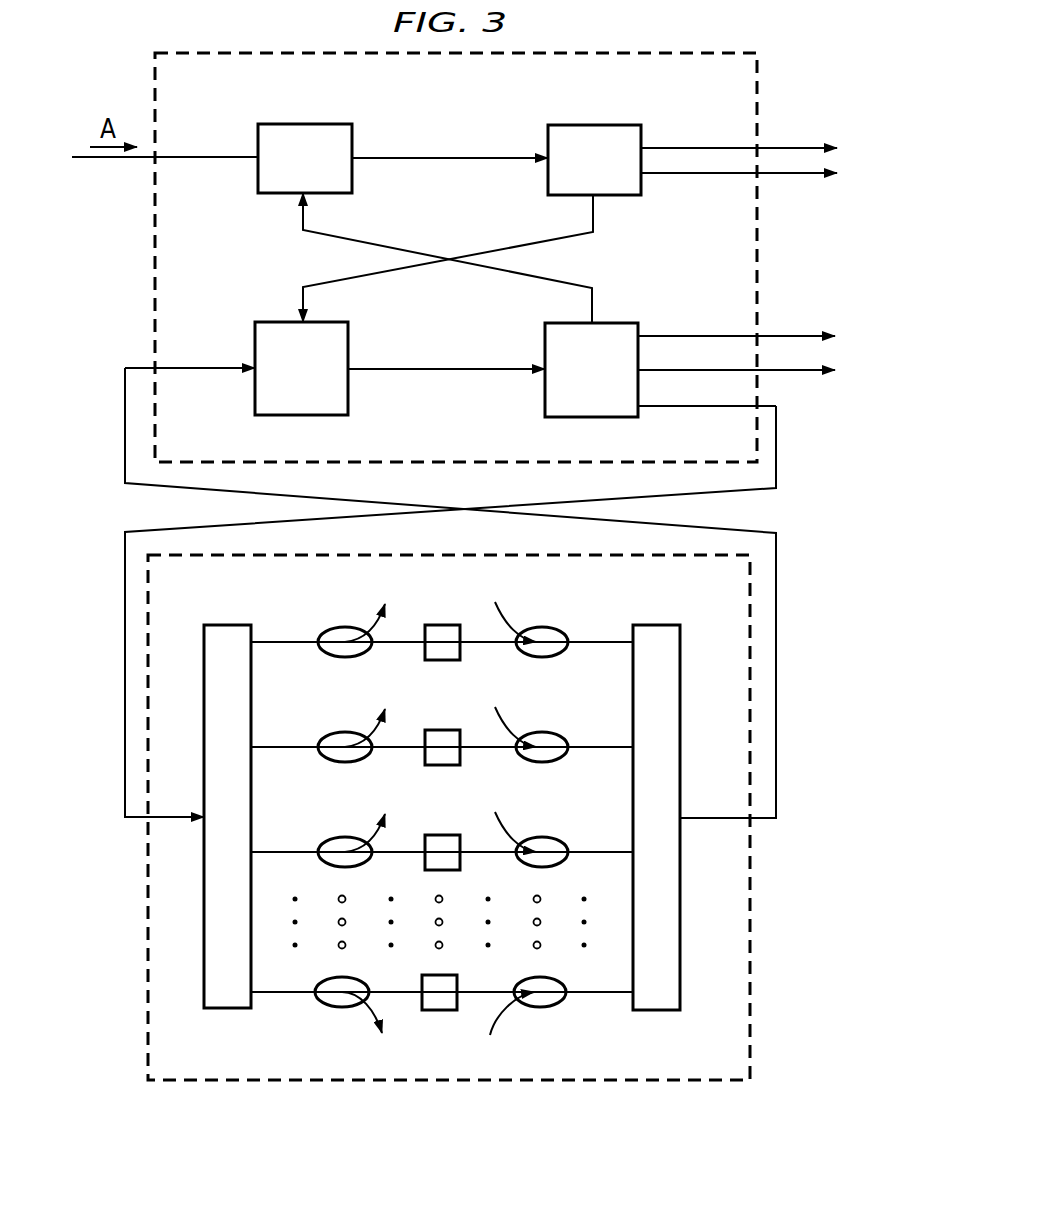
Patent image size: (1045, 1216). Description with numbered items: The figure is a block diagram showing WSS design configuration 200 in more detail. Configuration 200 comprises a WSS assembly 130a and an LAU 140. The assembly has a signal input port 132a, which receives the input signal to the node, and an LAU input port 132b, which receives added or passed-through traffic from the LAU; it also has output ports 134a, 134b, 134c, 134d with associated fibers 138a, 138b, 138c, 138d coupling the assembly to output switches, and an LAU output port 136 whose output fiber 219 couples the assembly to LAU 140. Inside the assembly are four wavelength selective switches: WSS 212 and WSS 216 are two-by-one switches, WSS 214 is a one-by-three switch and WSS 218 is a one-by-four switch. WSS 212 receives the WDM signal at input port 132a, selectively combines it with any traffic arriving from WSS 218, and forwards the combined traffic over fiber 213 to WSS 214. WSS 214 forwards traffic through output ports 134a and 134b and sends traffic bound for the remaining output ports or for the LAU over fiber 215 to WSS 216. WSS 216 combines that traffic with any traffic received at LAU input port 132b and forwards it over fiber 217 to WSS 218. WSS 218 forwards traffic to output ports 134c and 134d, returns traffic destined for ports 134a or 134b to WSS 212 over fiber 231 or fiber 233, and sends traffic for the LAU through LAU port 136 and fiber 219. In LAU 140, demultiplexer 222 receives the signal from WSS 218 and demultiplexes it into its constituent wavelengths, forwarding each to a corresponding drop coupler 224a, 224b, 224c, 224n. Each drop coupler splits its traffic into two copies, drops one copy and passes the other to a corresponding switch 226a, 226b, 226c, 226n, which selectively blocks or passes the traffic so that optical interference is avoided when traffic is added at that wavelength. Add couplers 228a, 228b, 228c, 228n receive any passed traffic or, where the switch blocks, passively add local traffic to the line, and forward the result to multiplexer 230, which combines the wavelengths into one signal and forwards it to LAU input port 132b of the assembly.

The WSS design configuration 200 is at (860, 62).
The WSS assembly 130a is at (150, 283).
The LAU 140 is at (146, 905).
The WSS 212 is at (285, 122).
The fiber 213 is at (450, 155).
The WSS 214 is at (605, 123).
The fiber 215 is at (520, 243).
The WSS 216 is at (282, 320).
The fiber 217 is at (445, 372).
The WSS 218 is at (612, 320).
The output fiber 219 is at (778, 465).
The fiber 231 is at (125, 430).
The fiber 233 is at (518, 280).
The signal input port 132a is at (255, 154).
The LAU input port 132b is at (251, 382).
The output port 134a is at (650, 143).
The output port 134b is at (650, 180).
The output port 134c is at (650, 332).
The output port 134d is at (648, 364).
The LAU output port 136 is at (648, 412).
The fiber 138a is at (798, 145).
The fiber 138b is at (798, 178).
The fiber 138c is at (800, 333).
The fiber 138d is at (805, 375).
The demultiplexer 222 is at (225, 1010).
The drop coupler 224a is at (348, 628).
The drop coupler 224b is at (348, 733).
The drop coupler 224c is at (348, 838).
The drop coupler 224n is at (340, 1010).
The switch 226a is at (460, 603).
The switch 226b is at (460, 708).
The switch 226c is at (460, 813).
The switch 226n is at (440, 1012).
The add coupler 228a is at (540, 626).
The add coupler 228b is at (540, 731).
The add coupler 228c is at (540, 836).
The add coupler 228n is at (538, 1010).
The multiplexer 230 is at (652, 1012).